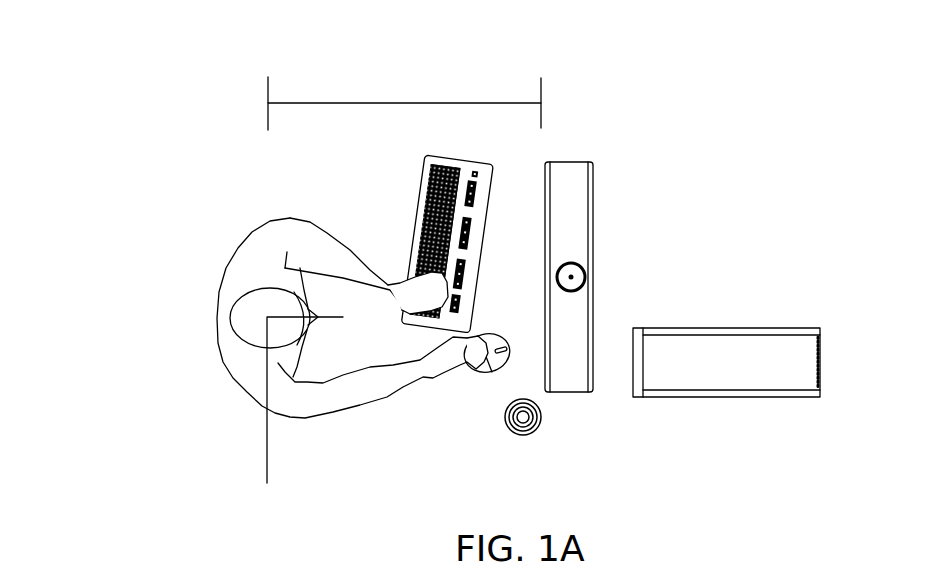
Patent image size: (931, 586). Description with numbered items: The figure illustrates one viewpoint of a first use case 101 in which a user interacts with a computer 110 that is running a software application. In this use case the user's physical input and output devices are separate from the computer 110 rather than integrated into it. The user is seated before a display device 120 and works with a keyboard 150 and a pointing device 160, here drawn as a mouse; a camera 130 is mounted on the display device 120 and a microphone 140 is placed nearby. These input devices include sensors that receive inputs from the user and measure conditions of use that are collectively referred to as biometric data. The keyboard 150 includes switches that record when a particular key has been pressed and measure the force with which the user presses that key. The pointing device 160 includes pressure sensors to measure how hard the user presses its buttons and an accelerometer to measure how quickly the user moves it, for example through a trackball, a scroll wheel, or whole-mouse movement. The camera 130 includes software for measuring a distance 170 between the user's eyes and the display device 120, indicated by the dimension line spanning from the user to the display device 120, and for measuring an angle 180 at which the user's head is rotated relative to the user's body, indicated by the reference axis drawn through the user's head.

The first use case 101 is at (168, 52).
The computer 110 is at (773, 398).
The display device 120 is at (593, 190).
The camera 130 is at (583, 288).
The microphone 140 is at (520, 440).
The keyboard 150 is at (422, 175).
The pointing device 160 is at (485, 377).
The distance 170 is at (382, 102).
The angle 180 is at (267, 452).